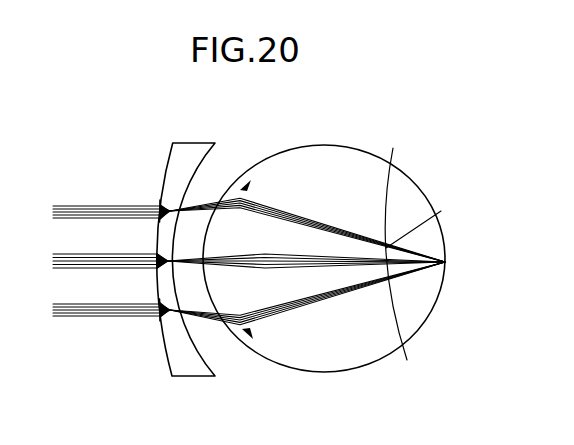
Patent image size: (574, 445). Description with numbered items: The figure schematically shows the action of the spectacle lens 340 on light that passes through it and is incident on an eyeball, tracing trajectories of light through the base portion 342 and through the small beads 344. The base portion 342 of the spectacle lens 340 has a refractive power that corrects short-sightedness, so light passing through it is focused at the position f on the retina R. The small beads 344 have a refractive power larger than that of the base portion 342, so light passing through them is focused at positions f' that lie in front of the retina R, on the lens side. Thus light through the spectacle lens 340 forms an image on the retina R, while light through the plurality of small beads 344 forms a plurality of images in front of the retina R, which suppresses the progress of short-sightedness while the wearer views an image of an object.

The spectacle lens 340 is at (174, 236).
The base portion 342 is at (190, 150).
The small beads 344 is at (165, 200).
The retina R is at (446, 246).
The position f is at (468, 264).
The positions f' is at (419, 254).